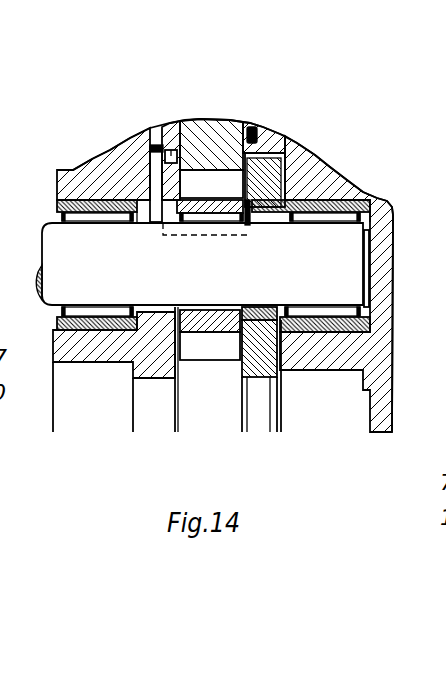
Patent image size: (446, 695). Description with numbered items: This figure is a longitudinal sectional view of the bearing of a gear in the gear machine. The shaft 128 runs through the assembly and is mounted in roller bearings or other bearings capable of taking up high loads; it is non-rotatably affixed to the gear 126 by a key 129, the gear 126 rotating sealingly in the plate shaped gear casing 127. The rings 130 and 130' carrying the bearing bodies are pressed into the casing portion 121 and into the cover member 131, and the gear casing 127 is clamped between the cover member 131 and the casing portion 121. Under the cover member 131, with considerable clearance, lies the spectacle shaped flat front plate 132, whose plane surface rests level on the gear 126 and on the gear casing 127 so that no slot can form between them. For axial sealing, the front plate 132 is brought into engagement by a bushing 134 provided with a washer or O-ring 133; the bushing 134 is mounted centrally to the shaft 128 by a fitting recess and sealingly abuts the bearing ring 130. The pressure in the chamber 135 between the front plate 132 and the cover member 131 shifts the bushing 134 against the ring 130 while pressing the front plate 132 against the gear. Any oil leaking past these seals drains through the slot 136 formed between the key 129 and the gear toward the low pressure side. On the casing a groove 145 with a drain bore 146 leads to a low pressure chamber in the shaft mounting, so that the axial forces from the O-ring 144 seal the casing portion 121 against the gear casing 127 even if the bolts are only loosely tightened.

The ring 130' is at (96, 132).
The drain bore 146 is at (140, 200).
The gear 126 is at (158, 172).
The groove 145 is at (172, 150).
The gear casing 127 is at (217, 137).
The O-ring 144 is at (251, 130).
The chamber 135 is at (270, 153).
The washer or O-ring 133 is at (302, 195).
The bushing 134 is at (347, 183).
The cover member 131 is at (358, 207).
The ring 130 is at (234, 275).
The shaft 128 is at (199, 264).
The key 129 is at (203, 222).
The slot 136 is at (213, 224).
The casing portion 121 is at (108, 353).
The front plate 132 is at (258, 358).